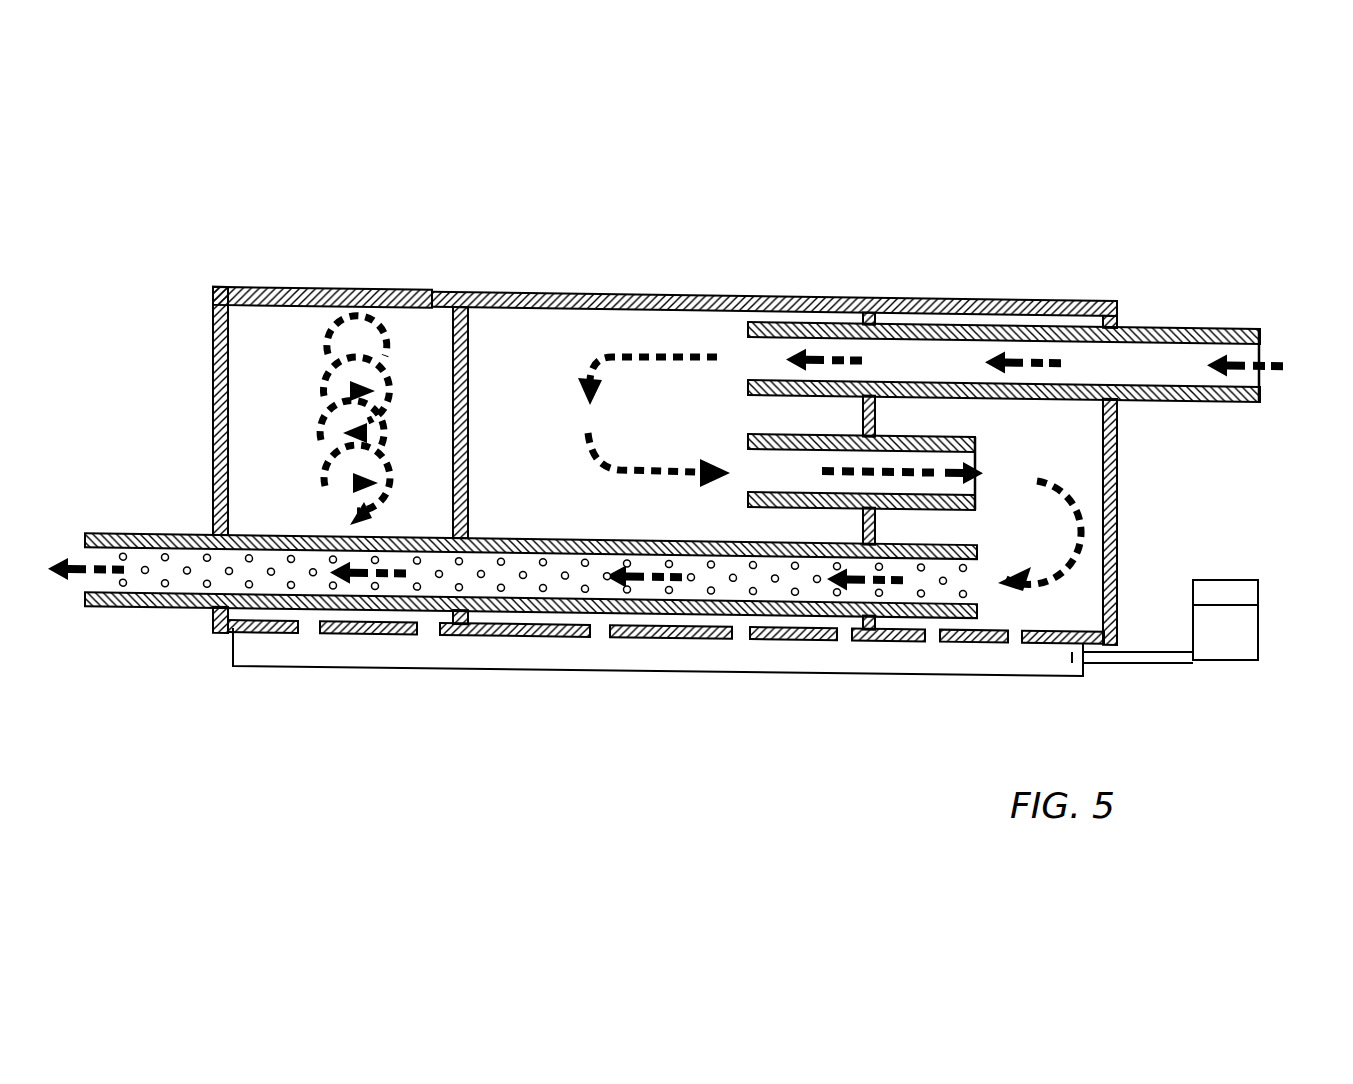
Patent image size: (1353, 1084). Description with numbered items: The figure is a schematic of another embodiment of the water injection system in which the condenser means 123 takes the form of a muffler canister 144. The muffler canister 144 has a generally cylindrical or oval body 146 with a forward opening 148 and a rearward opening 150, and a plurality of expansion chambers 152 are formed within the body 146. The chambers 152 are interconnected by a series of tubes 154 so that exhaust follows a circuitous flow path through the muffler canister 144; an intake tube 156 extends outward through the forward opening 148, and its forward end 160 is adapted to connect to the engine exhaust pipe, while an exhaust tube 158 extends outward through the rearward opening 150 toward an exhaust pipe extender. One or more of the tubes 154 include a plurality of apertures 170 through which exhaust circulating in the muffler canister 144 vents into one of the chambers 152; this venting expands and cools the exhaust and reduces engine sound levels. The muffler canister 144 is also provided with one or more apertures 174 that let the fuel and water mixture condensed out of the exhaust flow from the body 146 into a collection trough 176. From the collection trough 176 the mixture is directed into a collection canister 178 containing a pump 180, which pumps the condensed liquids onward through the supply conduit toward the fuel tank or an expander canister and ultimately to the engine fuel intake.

The condenser means 123 is at (845, 262).
The muffler canister 144 is at (893, 300).
The body 146 is at (653, 300).
The forward opening 148 is at (1142, 400).
The rearward opening 150 is at (210, 532).
The expansion chambers 152 is at (283, 313).
The tubes 154 is at (633, 622).
The intake tube 156 is at (1175, 330).
The exhaust tube 158 is at (187, 606).
The forward end 160 is at (1260, 327).
The apertures 170 is at (543, 591).
The apertures 174 is at (420, 631).
The collection trough 176 is at (990, 662).
The collection canister 178 is at (1217, 663).
The pump 180 is at (1240, 592).